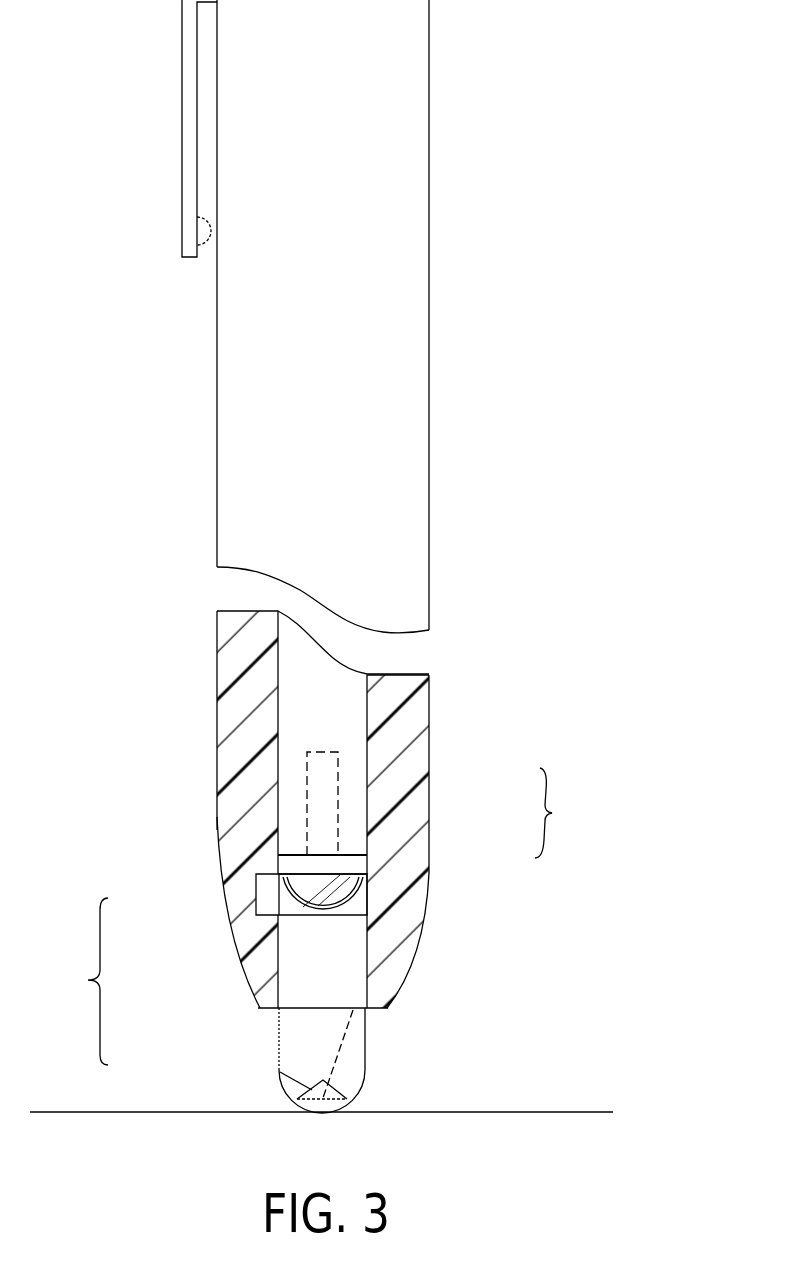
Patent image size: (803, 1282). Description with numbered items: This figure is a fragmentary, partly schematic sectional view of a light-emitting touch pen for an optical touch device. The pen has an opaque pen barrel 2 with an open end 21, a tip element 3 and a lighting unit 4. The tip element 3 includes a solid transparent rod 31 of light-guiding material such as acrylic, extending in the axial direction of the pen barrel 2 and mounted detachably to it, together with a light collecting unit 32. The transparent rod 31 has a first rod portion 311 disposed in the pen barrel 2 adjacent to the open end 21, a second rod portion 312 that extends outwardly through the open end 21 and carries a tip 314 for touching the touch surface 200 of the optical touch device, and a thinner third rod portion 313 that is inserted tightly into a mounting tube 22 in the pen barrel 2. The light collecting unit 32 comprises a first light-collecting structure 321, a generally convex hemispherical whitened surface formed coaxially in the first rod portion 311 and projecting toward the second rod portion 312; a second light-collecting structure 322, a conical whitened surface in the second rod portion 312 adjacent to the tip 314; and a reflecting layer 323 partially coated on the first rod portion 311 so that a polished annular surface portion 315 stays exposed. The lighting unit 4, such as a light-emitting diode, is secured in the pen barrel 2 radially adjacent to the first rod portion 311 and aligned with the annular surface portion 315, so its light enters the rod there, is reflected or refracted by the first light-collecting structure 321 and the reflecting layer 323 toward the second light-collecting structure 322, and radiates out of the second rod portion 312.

The pen barrel 2 is at (432, 291).
The open end 21 is at (278, 1009).
The mounting tube 22 is at (365, 704).
The tip element 3 is at (372, 945).
The transparent rod 31 is at (361, 885).
The first rod portion 311 is at (368, 890).
The second rod portion 312 is at (358, 1038).
The third rod portion 313 is at (338, 795).
The tip 314 is at (325, 1113).
The annular surface portion 315 is at (282, 895).
The light collecting unit 32 is at (207, 982).
The first light-collecting structure 321 is at (290, 900).
The second light-collecting structure 322 is at (280, 1072).
The reflecting layer 323 is at (280, 955).
The lighting unit 4 is at (263, 878).
The touch surface 200 is at (568, 1112).